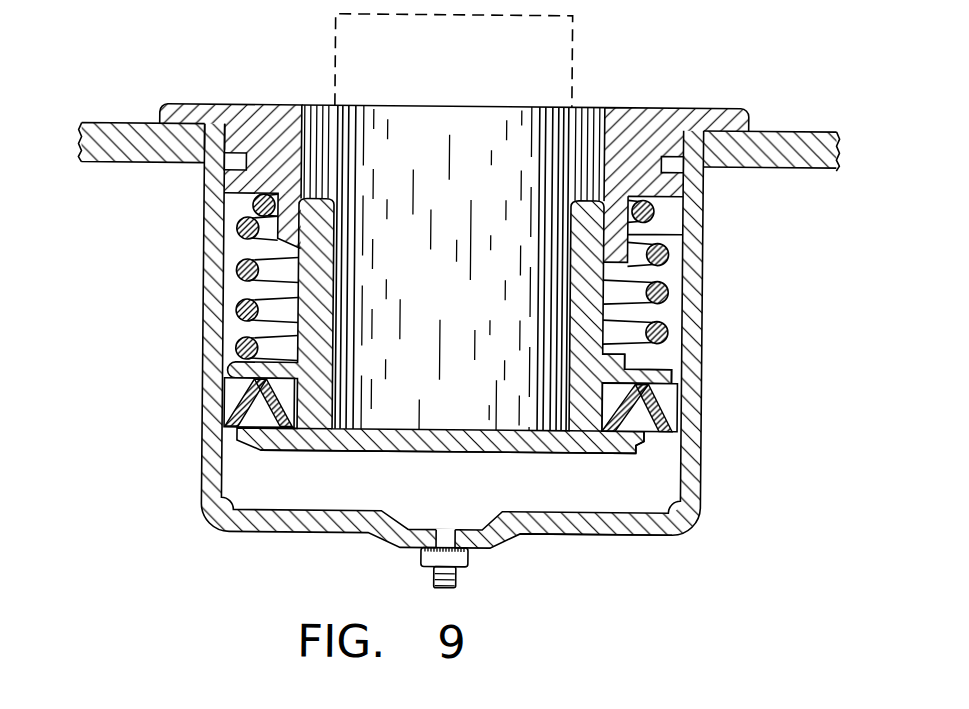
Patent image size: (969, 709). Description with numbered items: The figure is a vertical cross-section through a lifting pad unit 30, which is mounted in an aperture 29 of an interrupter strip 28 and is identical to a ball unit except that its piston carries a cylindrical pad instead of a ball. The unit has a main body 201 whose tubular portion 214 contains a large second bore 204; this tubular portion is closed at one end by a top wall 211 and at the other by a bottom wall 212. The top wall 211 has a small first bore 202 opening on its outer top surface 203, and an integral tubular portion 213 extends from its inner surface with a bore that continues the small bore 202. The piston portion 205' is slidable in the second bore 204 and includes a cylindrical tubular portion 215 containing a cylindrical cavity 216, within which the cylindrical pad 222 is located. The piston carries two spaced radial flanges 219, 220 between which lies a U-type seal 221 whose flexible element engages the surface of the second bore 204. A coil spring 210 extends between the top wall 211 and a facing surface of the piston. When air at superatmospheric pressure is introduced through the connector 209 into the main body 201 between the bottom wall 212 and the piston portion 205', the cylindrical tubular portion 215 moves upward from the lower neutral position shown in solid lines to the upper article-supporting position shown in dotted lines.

The interrupter strip 28 is at (101, 135).
The aperture 29 is at (207, 146).
The lifting pad unit 30 is at (653, 102).
The main body 201 is at (702, 285).
The first bore 202 is at (298, 244).
The top surface 203 is at (263, 106).
The second bore 204 is at (676, 402).
The piston portion 205' is at (447, 469).
The connector 209 is at (465, 578).
The coil spring 210 is at (237, 312).
The top wall 211 is at (700, 104).
The bottom wall 212 is at (600, 526).
The tubular portion 213 is at (622, 231).
The tubular portion 214 is at (697, 178).
The cylindrical tubular portion 215 is at (595, 310).
The cylindrical cavity 216 is at (327, 426).
The radial flange 219 is at (655, 374).
The radial flange 220 is at (640, 443).
The U-type seal 221 is at (222, 400).
The cylindrical pad 222 is at (448, 128).